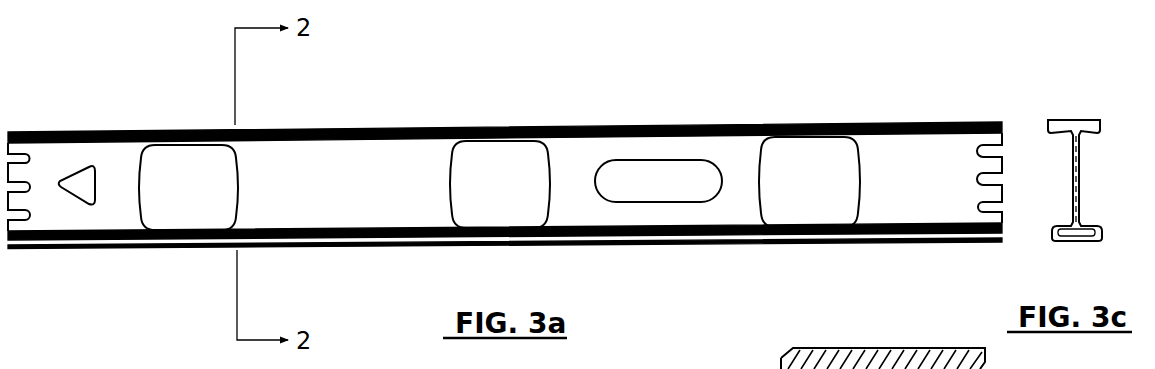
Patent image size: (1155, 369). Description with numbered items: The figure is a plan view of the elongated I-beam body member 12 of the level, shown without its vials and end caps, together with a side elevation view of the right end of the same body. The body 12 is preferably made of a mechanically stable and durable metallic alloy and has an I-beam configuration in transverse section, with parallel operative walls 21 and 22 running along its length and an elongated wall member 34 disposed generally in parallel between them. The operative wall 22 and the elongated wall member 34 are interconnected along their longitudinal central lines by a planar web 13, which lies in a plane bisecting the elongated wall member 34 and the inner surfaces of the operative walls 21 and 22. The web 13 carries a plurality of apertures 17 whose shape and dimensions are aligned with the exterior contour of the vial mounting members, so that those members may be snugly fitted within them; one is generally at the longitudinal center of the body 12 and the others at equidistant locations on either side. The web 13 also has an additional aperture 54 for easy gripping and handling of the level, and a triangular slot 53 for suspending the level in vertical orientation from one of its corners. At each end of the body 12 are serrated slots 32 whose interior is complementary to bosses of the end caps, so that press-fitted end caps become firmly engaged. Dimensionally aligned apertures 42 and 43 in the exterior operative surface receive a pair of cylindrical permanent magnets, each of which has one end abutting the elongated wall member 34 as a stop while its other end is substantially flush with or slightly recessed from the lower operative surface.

The body member 12 is at (489, 110).
The web 13 is at (347, 202).
The apertures 17 is at (793, 158).
The first operative wall 21 is at (393, 249).
The second operative wall 22 is at (399, 126).
The serrated slots 32 is at (992, 151).
The elongated wall member 34 is at (545, 233).
The aperture 42 is at (240, 240).
The aperture 43 is at (767, 238).
The triangular slot 53 is at (84, 189).
The aperture 54 is at (642, 178).